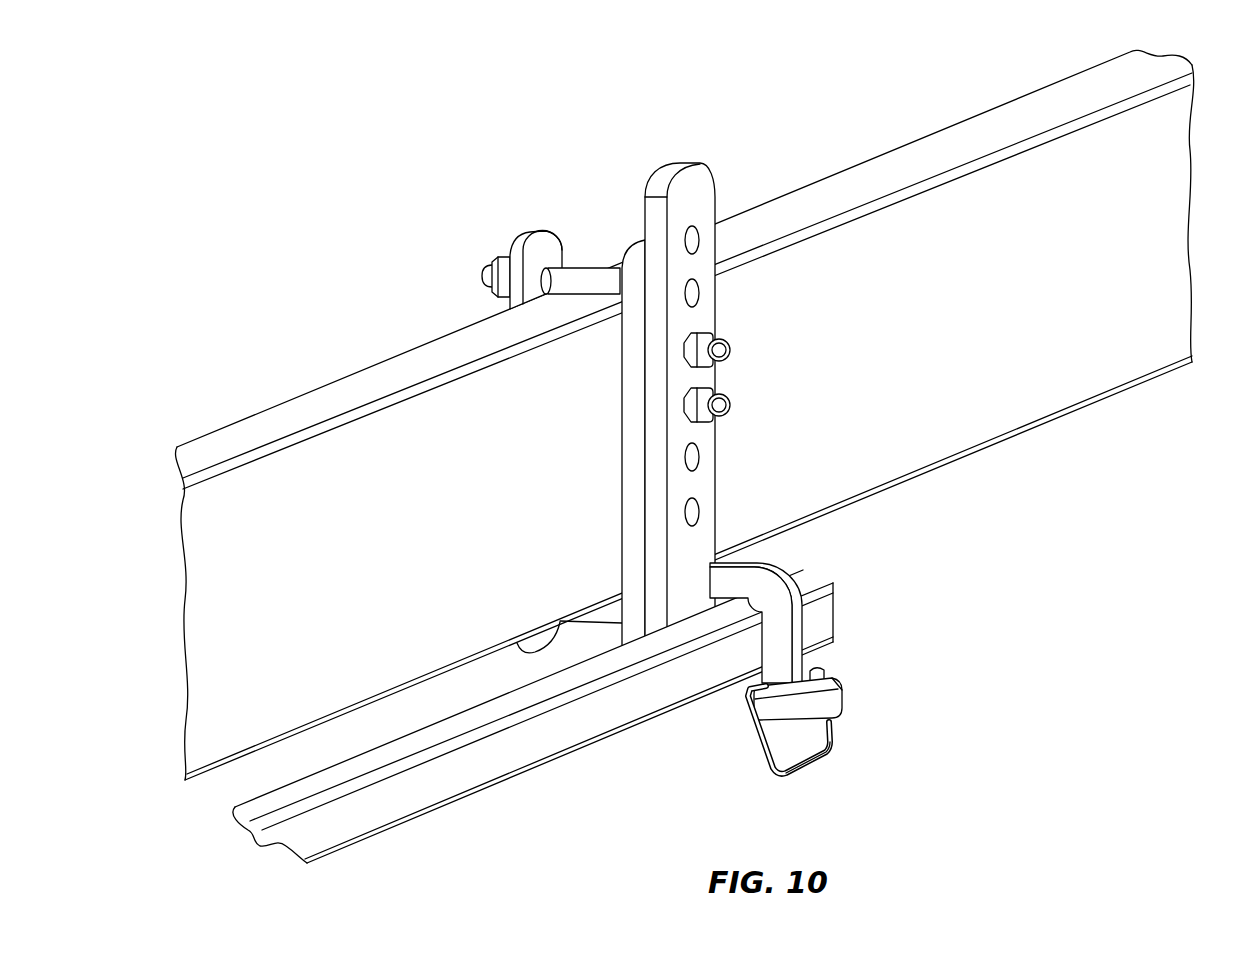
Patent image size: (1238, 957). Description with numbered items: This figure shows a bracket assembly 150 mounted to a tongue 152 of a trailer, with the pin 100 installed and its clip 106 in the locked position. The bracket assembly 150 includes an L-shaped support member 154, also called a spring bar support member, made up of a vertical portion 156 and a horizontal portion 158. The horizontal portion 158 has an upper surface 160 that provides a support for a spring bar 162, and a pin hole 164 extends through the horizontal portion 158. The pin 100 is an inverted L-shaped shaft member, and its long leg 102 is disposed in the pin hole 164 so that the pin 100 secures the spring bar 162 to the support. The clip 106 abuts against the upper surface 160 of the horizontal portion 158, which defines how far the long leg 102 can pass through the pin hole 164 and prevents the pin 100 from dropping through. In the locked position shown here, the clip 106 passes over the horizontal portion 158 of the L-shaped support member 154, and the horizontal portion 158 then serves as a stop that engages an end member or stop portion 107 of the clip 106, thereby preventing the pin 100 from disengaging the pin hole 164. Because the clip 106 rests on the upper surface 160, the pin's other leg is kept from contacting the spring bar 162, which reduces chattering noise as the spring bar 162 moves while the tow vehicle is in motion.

The pin 100 is at (786, 567).
The long leg 102 is at (810, 758).
The clip 106 is at (856, 680).
The stop portion 107 is at (794, 770).
The bracket assembly 150 is at (644, 385).
The tongue 152 is at (1112, 365).
The L-shaped support member 154 is at (692, 180).
The vertical portion 156 is at (703, 204).
The horizontal portion 158 is at (835, 703).
The upper surface 160 is at (823, 678).
The spring bar 162 is at (590, 727).
The pin hole 164 is at (847, 680).